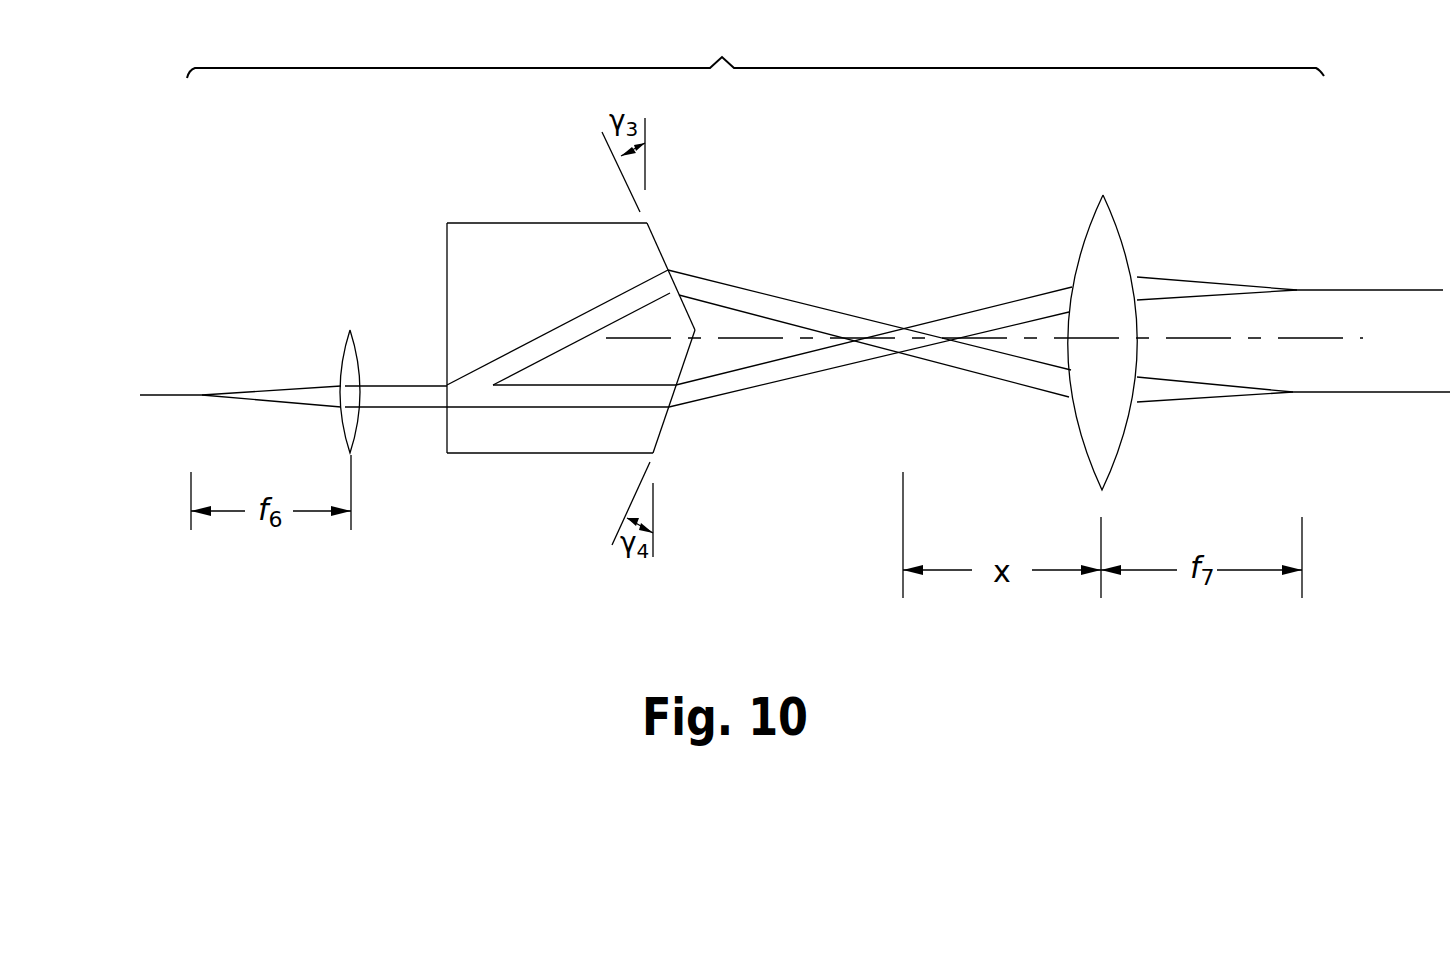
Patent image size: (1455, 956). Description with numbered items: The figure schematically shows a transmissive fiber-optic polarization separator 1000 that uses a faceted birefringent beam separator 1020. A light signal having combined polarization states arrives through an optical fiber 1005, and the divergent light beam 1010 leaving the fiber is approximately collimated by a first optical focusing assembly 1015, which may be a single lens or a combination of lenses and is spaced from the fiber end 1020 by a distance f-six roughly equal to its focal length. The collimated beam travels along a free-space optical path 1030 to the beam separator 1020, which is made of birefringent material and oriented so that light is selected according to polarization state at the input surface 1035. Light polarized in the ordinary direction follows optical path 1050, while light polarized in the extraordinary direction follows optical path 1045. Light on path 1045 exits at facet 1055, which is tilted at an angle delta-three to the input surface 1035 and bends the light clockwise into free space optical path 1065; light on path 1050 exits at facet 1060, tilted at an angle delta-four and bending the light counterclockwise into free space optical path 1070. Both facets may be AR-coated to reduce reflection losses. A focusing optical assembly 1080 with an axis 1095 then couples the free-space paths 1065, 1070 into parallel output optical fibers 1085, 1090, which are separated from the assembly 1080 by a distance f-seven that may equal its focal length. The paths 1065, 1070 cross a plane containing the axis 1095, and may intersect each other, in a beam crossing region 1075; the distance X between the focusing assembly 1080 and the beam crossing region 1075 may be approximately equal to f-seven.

The transmissive fiber-optic polarization separator 1000 is at (755, 52).
The optical fiber 1005 is at (160, 396).
The divergent light beam 1010 is at (257, 388).
The first optical focusing assembly 1015 is at (348, 348).
The faceted birefringent beam separator 1020 is at (516, 223).
The free-space optical path 1030 is at (409, 409).
The input surface 1035 is at (447, 246).
The optical path 1045 is at (540, 337).
The optical path 1050 is at (569, 409).
The facet 1055 is at (682, 229).
The facet 1060 is at (663, 430).
The free space optical path 1065 is at (765, 292).
The free space optical path 1070 is at (807, 376).
The beam crossing region 1075 is at (907, 327).
The focusing optical assembly 1080 is at (1103, 194).
The optical fiber 1085 is at (1373, 288).
The optical fiber 1090 is at (1385, 390).
The axis 1095 is at (1240, 337).